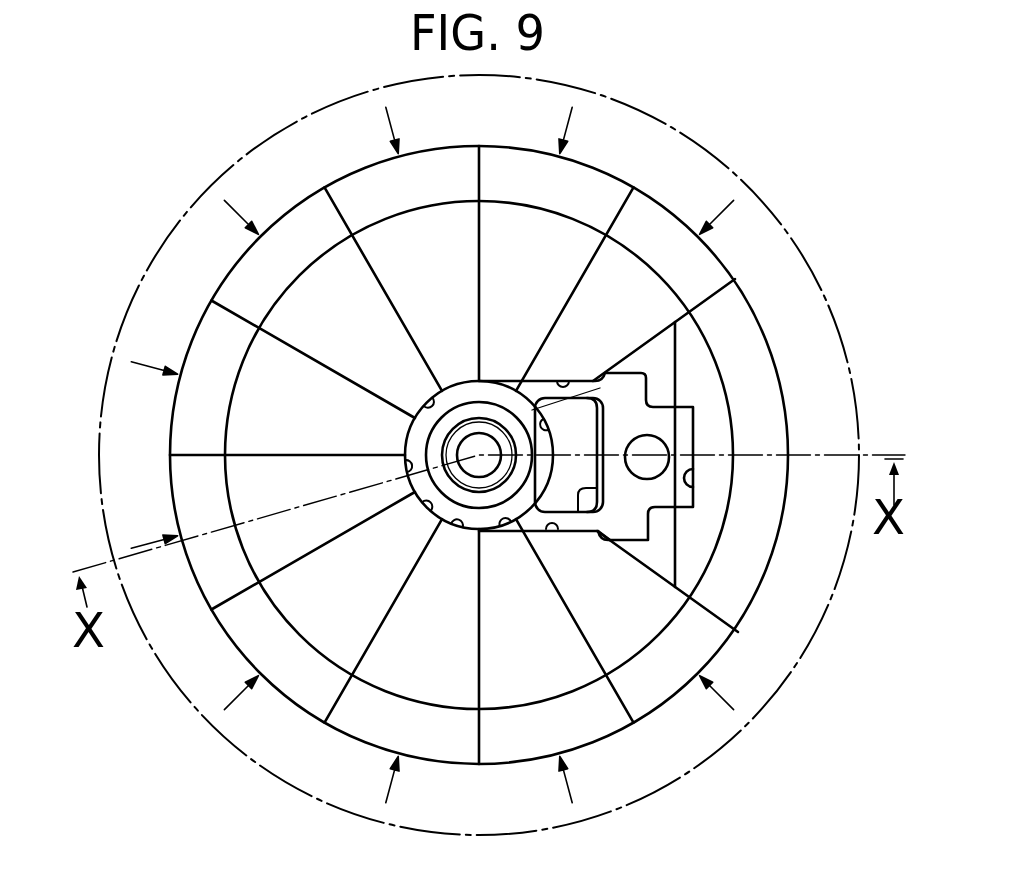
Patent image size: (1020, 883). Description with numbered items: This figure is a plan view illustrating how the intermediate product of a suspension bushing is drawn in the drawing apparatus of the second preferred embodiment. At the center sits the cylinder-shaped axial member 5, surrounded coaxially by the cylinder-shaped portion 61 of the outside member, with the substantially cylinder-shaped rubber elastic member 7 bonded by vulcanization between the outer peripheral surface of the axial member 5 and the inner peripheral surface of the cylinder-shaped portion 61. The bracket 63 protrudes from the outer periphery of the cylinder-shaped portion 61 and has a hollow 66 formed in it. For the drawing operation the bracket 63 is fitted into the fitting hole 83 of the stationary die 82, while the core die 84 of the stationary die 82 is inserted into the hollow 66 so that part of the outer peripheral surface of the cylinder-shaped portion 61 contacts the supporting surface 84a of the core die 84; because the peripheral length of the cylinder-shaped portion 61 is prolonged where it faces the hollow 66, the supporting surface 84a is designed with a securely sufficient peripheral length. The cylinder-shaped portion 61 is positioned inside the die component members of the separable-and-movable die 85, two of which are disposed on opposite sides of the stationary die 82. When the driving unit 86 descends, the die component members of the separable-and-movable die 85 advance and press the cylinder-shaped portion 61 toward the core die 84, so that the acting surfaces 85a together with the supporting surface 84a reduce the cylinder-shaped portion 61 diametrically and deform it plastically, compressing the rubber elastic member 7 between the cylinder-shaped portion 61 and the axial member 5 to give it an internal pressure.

The axial member 5 is at (473, 432).
The rubber elastic member 7 is at (493, 410).
The cylinder-shaped portion 61 is at (418, 437).
The bracket 63 is at (619, 495).
The hollow 66 is at (616, 550).
The stationary die 82 is at (703, 407).
The fitting hole 83 is at (695, 490).
The core die 84 is at (650, 396).
The supporting surface 84a is at (577, 435).
The separable-and-movable die 85 is at (441, 265).
The acting surfaces 85a is at (419, 402).
The driving unit 86 is at (755, 182).